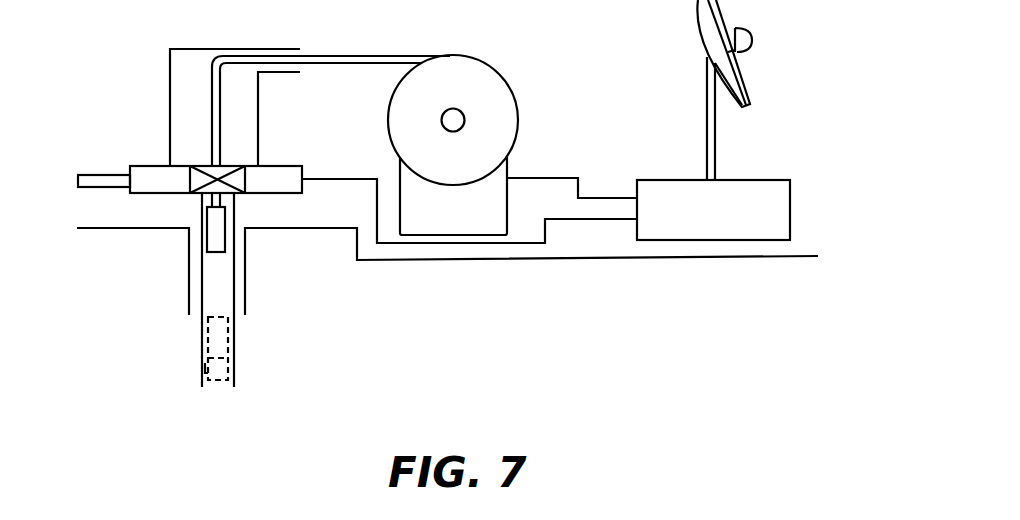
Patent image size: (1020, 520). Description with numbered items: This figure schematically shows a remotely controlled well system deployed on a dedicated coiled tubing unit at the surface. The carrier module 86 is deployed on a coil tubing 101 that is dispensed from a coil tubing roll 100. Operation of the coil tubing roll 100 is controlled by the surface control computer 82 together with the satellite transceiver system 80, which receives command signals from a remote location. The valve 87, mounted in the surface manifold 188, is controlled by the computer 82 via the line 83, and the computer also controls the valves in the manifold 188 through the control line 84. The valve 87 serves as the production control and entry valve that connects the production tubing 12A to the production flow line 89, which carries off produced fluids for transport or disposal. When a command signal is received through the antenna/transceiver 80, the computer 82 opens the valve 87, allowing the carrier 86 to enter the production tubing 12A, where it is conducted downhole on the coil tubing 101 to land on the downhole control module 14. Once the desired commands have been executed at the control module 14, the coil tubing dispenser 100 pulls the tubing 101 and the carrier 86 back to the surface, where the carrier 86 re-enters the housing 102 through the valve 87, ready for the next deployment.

The housing 102 is at (207, 49).
The coil tubing 101 is at (378, 54).
The coil tubing roll 100 is at (513, 84).
The manifold 188 is at (162, 166).
The valve 87 is at (241, 194).
The production flow line 89 is at (92, 175).
The line 83 is at (312, 177).
The control line 84 is at (550, 177).
The surface control computer 82 is at (790, 205).
The satellite transceiver system 80 is at (744, 82).
The production tubing 12A is at (202, 332).
The carrier module 86 is at (225, 252).
The downhole control module 14 is at (200, 370).